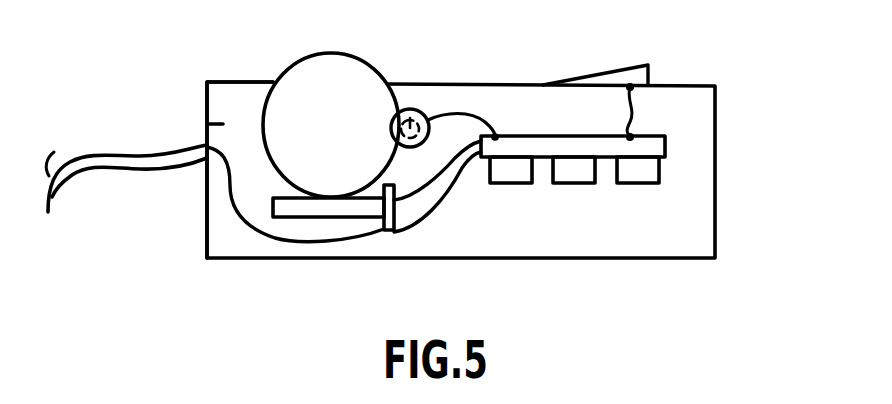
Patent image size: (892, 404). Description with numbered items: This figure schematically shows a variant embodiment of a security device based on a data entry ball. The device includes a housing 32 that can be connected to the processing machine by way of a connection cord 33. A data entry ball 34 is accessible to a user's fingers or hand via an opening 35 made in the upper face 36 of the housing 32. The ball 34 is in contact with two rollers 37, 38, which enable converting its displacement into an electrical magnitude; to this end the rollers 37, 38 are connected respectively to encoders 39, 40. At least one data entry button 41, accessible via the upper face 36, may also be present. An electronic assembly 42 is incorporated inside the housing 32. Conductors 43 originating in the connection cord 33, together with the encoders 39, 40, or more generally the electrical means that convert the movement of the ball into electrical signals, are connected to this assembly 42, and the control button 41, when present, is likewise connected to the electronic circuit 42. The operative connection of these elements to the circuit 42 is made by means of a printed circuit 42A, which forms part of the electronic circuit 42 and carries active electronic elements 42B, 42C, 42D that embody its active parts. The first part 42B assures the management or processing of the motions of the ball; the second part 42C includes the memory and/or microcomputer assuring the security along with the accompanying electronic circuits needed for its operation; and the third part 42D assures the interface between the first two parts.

The housing 32 is at (207, 124).
The connection cord 33 is at (127, 166).
The data entry ball 34 is at (357, 86).
The opening 35 is at (273, 83).
The upper face 36 is at (233, 93).
The roller 37 is at (413, 111).
The roller 38 is at (308, 210).
The encoder 39 is at (429, 117).
The encoder 40 is at (387, 218).
The data entry button 41 is at (620, 78).
The electronic assembly 42 is at (643, 200).
The printed circuit 42A is at (653, 147).
The first part 42B is at (638, 173).
The second part 42C is at (577, 173).
The third part 42D is at (515, 173).
The conductors 43 is at (438, 197).